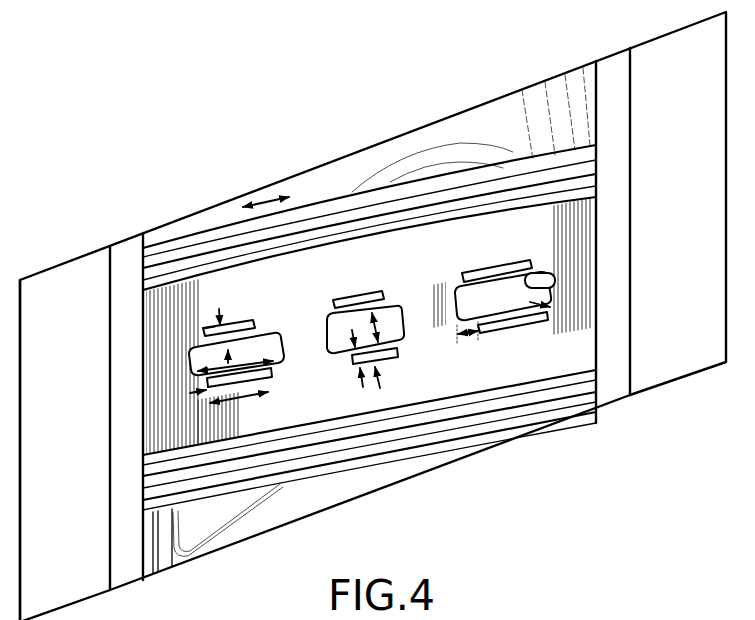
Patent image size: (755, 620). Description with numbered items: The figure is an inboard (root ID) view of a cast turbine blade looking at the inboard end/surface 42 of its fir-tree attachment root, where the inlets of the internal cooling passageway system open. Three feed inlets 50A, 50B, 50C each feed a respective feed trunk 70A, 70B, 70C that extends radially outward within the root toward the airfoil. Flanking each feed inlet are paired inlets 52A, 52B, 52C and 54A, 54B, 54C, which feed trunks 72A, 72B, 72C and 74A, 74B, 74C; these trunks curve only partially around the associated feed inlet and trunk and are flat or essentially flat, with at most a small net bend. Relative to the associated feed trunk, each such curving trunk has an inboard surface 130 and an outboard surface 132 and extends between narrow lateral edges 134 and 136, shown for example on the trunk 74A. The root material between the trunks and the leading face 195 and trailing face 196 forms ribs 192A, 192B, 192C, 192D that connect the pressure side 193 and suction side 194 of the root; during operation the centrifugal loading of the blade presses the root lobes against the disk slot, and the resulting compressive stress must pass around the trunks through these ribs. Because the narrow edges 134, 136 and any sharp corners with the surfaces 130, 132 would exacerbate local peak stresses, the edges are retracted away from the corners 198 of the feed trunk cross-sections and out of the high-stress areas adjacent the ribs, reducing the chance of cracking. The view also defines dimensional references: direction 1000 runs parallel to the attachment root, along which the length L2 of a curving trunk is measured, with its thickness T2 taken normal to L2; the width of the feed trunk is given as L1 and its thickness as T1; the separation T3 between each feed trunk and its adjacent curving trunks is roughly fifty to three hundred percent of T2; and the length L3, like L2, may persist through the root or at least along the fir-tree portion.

The direction parallel to the attachment root 1000 is at (262, 198).
The inboard end/surface 42 is at (267, 432).
The inlet 50A is at (574, 254).
The inlet 50B is at (401, 308).
The inlet 50C is at (163, 312).
The inlet 52A is at (552, 324).
The inlet 52B is at (380, 368).
The inlet 52C is at (190, 393).
The inlet 54A is at (549, 264).
The inlet 54B is at (357, 290).
The inlet 54C is at (236, 319).
The trunk 70A is at (554, 300).
The trunk 70B is at (403, 338).
The trunk 70C is at (197, 347).
The trunk 72A is at (540, 327).
The trunk 72B is at (400, 357).
The trunk 72C is at (206, 381).
The trunk 74A is at (513, 270).
The trunk 74B is at (336, 298).
The trunk 74C is at (204, 330).
The inboard surface 130 is at (493, 271).
The outboard surface 132 is at (520, 261).
The lateral edge 134 is at (555, 286).
The lateral edge 136 is at (406, 306).
The rib 192A is at (562, 280).
The rib 192B is at (442, 303).
The rib 192C is at (312, 330).
The rib 192D is at (163, 373).
The pressure side 193 is at (315, 463).
The suction side 194 is at (215, 325).
The leading face 195 is at (598, 240).
The trailing face 196 is at (141, 412).
The corners 198 is at (560, 267).
The thickness T1 is at (376, 327).
The thickness T2 is at (352, 364).
The separation T3 is at (218, 337).
The width L1 is at (272, 359).
The length L2 is at (249, 396).
The length L3 is at (472, 335).